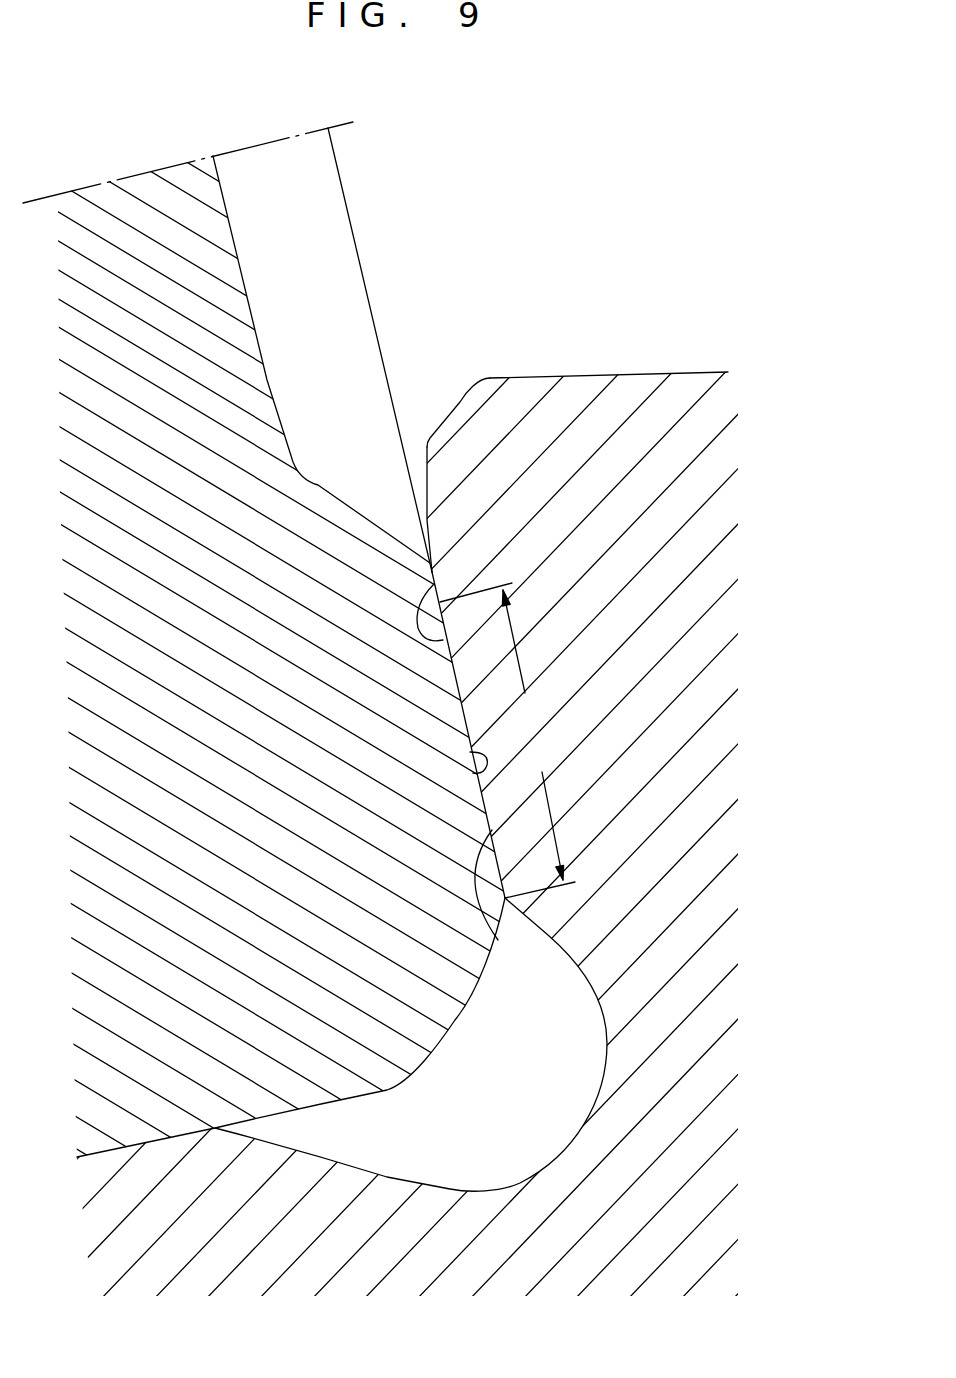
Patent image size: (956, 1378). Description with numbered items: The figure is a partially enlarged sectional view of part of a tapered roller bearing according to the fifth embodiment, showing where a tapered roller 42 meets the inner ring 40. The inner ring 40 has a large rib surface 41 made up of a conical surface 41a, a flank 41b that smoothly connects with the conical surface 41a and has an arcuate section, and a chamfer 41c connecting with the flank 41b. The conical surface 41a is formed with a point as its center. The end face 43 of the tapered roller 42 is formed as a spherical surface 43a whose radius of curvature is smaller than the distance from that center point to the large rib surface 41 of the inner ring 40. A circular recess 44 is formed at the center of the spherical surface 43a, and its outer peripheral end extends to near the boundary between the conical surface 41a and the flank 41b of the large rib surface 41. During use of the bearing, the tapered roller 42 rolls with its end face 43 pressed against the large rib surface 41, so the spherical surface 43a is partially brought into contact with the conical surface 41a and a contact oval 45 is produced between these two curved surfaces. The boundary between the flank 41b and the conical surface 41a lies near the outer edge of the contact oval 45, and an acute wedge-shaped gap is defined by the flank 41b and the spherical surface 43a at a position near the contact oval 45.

The inner ring 40 is at (669, 400).
The large rib surface 41 is at (495, 927).
The conical surface 41a is at (436, 580).
The flank 41b is at (427, 473).
The chamfer 41c is at (457, 398).
The tapered roller 42 is at (143, 220).
The end face 43 is at (409, 762).
The spherical surface 43a is at (474, 773).
The recess 44 is at (337, 508).
The contact oval 45 is at (537, 733).